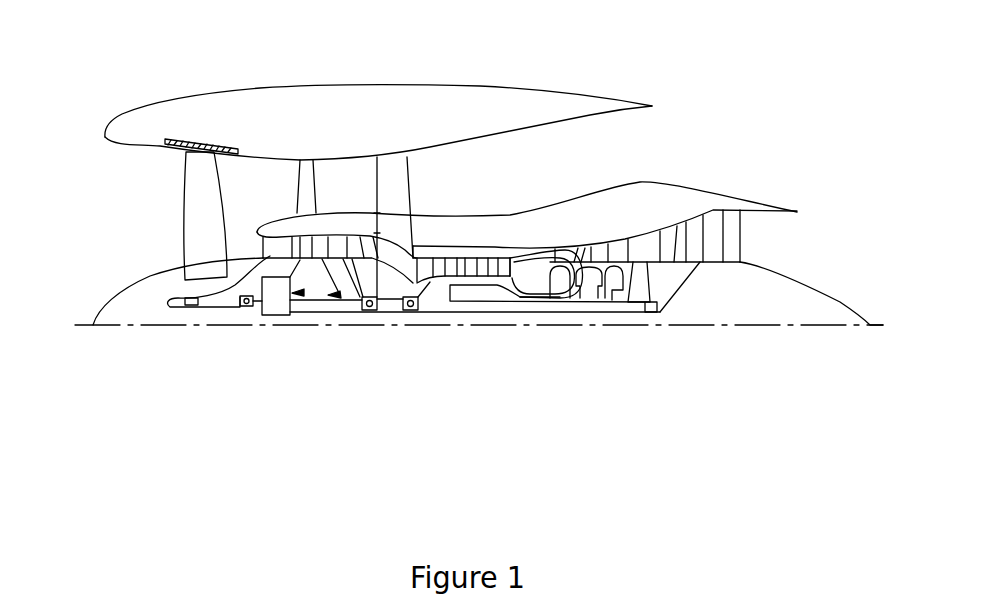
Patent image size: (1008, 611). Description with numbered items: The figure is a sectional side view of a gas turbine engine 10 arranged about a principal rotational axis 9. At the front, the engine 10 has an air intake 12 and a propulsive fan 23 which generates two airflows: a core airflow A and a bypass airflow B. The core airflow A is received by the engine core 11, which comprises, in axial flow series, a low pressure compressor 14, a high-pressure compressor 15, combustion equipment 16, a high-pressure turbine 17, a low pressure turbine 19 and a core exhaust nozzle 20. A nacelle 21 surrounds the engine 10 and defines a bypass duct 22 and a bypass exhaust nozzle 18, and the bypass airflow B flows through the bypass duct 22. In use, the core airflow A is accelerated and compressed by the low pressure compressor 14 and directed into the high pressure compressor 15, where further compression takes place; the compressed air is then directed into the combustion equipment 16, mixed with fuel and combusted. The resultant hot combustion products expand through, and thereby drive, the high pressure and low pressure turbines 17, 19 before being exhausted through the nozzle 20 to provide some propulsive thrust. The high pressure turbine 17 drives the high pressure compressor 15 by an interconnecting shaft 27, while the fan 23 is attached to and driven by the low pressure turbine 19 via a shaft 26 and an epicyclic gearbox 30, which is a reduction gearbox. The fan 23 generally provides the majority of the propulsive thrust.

The principal rotational axis 9 is at (712, 326).
The gas turbine engine 10 is at (165, 100).
The core 11 is at (520, 232).
The air intake 12 is at (118, 180).
The low pressure compressor 14 is at (338, 240).
The high-pressure compressor 15 is at (463, 265).
The combustion equipment 16 is at (543, 268).
The high-pressure turbine 17 is at (590, 253).
The bypass exhaust nozzle 18 is at (710, 142).
The low pressure turbine 19 is at (712, 228).
The core exhaust nozzle 20 is at (773, 247).
The nacelle 21 is at (400, 100).
The bypass duct 22 is at (631, 155).
The propulsive fan 23 is at (188, 220).
The shaft 26 is at (463, 313).
The interconnecting shaft 27 is at (500, 303).
The epicyclic gearbox 30 is at (277, 300).
The core airflow A is at (252, 247).
The bypass airflow B is at (262, 191).